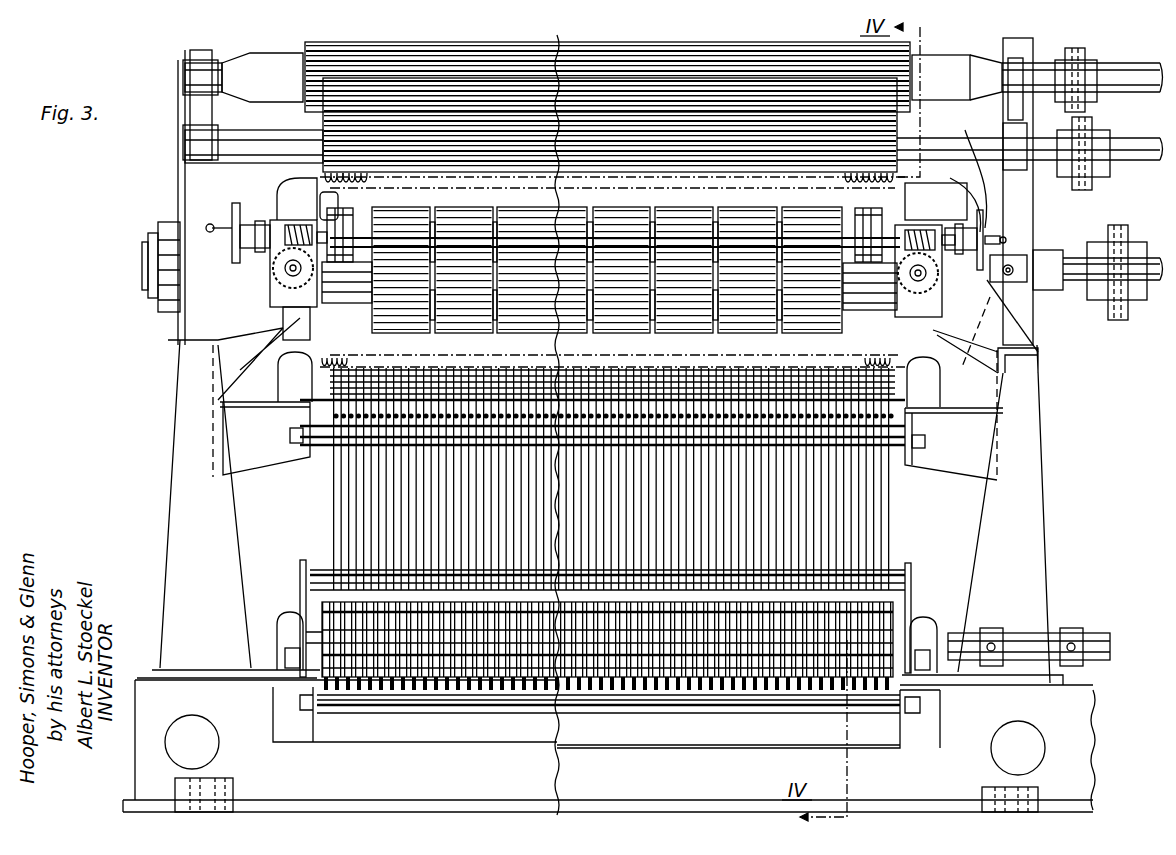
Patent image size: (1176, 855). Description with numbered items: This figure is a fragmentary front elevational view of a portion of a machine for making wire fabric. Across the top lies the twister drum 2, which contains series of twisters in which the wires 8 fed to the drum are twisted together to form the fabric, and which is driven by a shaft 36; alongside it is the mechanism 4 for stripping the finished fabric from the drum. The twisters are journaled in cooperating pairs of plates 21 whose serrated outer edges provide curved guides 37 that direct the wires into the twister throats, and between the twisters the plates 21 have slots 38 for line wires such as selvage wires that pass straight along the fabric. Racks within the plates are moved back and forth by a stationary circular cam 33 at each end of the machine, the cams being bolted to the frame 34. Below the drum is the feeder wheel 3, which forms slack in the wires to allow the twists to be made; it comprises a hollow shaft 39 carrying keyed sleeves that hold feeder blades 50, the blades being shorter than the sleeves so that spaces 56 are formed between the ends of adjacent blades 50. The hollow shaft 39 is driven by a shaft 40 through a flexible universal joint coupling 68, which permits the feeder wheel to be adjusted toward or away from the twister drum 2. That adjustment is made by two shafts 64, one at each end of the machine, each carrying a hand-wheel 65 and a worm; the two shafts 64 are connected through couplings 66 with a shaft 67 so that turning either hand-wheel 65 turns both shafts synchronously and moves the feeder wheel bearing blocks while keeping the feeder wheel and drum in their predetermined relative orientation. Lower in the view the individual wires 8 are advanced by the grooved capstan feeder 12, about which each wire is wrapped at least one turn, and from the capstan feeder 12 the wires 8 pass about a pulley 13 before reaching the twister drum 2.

The twister drum 2 is at (440, 184).
The feeder wheel 3 is at (692, 332).
The stripping mechanism 4 is at (610, 46).
The wires 8 is at (343, 510).
The capstan feeder 12 is at (895, 612).
The pulley 13 is at (300, 410).
The plates 21 is at (335, 197).
The stationary circular cam 33 is at (982, 185).
The frame 34 is at (188, 322).
The shaft 36 is at (1080, 295).
The curved guides 37 is at (340, 182).
The slots 38 is at (360, 182).
The hollow shaft 39 is at (366, 292).
The shaft 40 is at (1072, 290).
The feeder blade 50 is at (677, 235).
The spaces 56 is at (490, 333).
The shaft 64 is at (265, 245).
The hand-wheel 65 is at (238, 252).
The couplings 66 is at (858, 225).
The shaft 67 is at (606, 240).
The flexible universal joint coupling 68 is at (1040, 255).